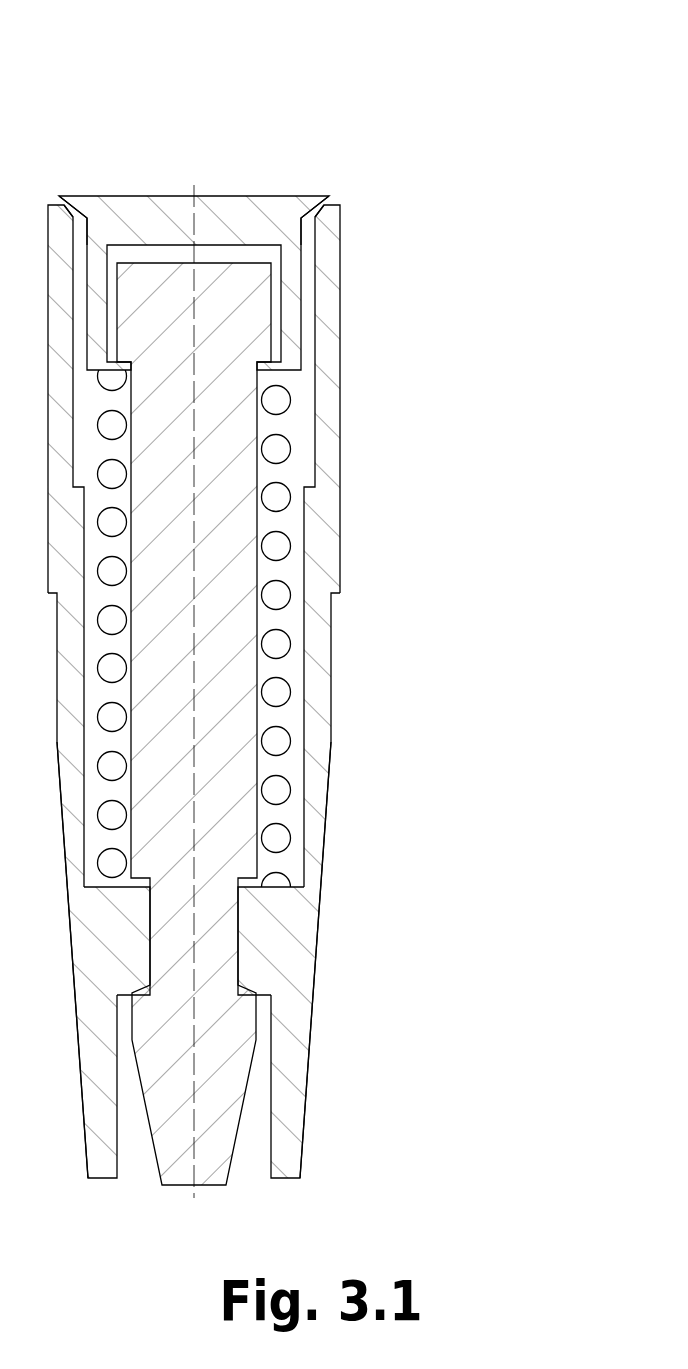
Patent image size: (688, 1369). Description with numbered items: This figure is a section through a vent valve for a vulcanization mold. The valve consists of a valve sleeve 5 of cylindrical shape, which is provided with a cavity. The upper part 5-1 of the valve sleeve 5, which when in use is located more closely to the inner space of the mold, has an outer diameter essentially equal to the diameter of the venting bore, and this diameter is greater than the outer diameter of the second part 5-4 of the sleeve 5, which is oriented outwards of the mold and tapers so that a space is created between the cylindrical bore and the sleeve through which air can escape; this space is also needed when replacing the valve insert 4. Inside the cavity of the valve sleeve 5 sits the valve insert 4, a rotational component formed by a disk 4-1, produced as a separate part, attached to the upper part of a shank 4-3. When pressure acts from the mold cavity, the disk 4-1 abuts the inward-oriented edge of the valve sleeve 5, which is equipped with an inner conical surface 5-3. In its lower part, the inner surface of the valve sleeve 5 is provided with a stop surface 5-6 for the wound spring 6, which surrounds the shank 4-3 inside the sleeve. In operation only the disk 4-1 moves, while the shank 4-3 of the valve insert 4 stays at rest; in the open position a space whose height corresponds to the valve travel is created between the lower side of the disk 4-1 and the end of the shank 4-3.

The valve insert 4 is at (323, 188).
The disk 4-1 is at (323, 155).
The shank 4-3 is at (352, 724).
The valve sleeve 5 is at (318, 691).
The part of the valve sleeve having greater outer diameter 5-1 is at (318, 480).
The inner conical surface 5-3 is at (326, 182).
The second part of the sleeve 5-4 is at (322, 848).
The stop surface 5-6 is at (336, 840).
The wound spring 6 is at (343, 632).